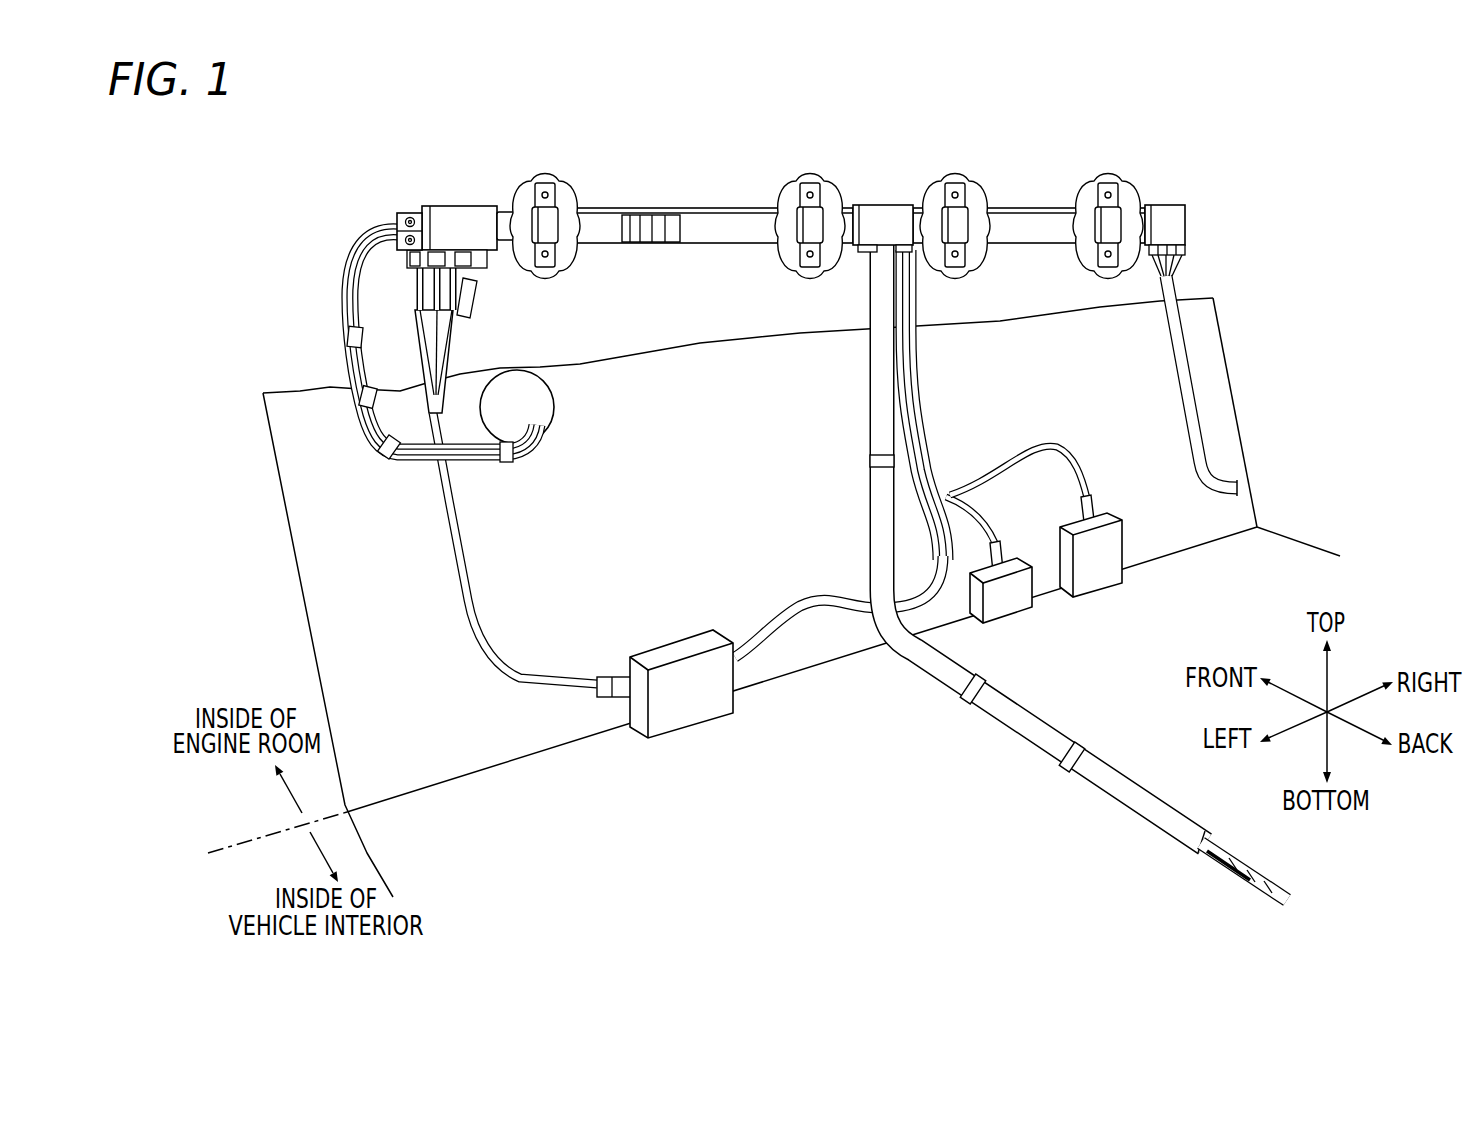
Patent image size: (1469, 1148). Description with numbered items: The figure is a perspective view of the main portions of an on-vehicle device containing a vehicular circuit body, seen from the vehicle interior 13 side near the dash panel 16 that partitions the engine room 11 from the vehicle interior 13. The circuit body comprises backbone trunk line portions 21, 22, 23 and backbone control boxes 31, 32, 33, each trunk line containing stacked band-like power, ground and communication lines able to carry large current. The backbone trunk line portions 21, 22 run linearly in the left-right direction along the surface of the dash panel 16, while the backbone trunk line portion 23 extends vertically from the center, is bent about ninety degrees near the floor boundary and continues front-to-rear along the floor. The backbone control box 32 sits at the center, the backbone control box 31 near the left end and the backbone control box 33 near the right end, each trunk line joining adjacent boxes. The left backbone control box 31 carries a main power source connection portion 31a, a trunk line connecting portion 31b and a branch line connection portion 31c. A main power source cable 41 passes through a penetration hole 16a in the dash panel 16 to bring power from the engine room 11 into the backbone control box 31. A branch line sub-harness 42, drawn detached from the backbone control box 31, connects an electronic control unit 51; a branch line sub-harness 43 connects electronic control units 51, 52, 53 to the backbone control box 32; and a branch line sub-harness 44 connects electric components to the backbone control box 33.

The engine room 11 is at (260, 635).
The vehicle interior 13 is at (1139, 728).
The dash panel 16 is at (275, 494).
The penetration hole 16a is at (542, 405).
The backbone trunk line portion 21 is at (703, 230).
The backbone trunk line portion 22 is at (1020, 228).
The backbone trunk line portion 23 is at (942, 677).
The backbone control box 31 is at (472, 167).
The main power source connection portion 31a is at (408, 213).
The trunk line connecting portion 31b is at (488, 207).
The branch line connection portion 31c is at (457, 260).
The backbone control box 32 is at (888, 200).
The backbone control box 33 is at (1167, 200).
The main power source cable 41 is at (367, 215).
The branch line sub-harness 42 is at (470, 306).
The branch line sub-harness 43 is at (932, 460).
The branch line sub-harness 44 is at (1180, 273).
The electronic control unit 51 is at (690, 707).
The electronic control unit 52 is at (1007, 605).
The electronic control unit 53 is at (1095, 578).